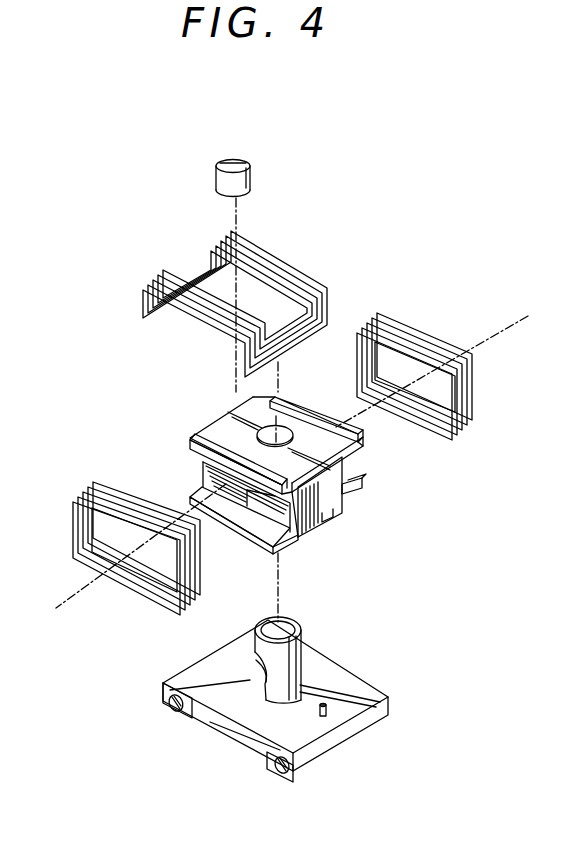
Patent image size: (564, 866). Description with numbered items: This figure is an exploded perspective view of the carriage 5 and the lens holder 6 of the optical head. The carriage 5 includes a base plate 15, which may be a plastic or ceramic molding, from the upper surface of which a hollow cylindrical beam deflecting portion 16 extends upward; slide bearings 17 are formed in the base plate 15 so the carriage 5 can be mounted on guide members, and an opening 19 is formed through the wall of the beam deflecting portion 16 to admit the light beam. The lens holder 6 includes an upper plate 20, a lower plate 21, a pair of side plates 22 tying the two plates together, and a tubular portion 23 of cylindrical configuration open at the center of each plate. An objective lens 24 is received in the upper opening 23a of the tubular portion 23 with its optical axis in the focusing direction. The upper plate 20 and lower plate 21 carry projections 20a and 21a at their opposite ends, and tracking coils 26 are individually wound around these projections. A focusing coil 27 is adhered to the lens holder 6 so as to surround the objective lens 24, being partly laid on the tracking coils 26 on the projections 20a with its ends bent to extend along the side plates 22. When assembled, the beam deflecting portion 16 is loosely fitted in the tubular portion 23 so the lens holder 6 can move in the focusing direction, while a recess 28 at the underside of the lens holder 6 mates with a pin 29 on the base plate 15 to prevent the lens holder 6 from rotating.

The carriage 5 is at (292, 718).
The lens holder 6 is at (336, 543).
The base plate 15 is at (388, 692).
The beam deflecting portion 16 is at (300, 652).
The slide bearings 17 is at (172, 705).
The opening 19 is at (258, 674).
The upper plate 20 is at (186, 441).
The projections 20a is at (215, 416).
The lower plate 21 is at (232, 540).
The projections 21a is at (366, 487).
The side plates 22 is at (198, 468).
The tubular portion 23 is at (273, 528).
The upper opening 23a is at (283, 425).
The objective lens 24 is at (253, 176).
The tracking coils 26 is at (411, 340).
The focusing coil 27 is at (312, 292).
The recess 28 is at (332, 516).
The pin 29 is at (328, 713).